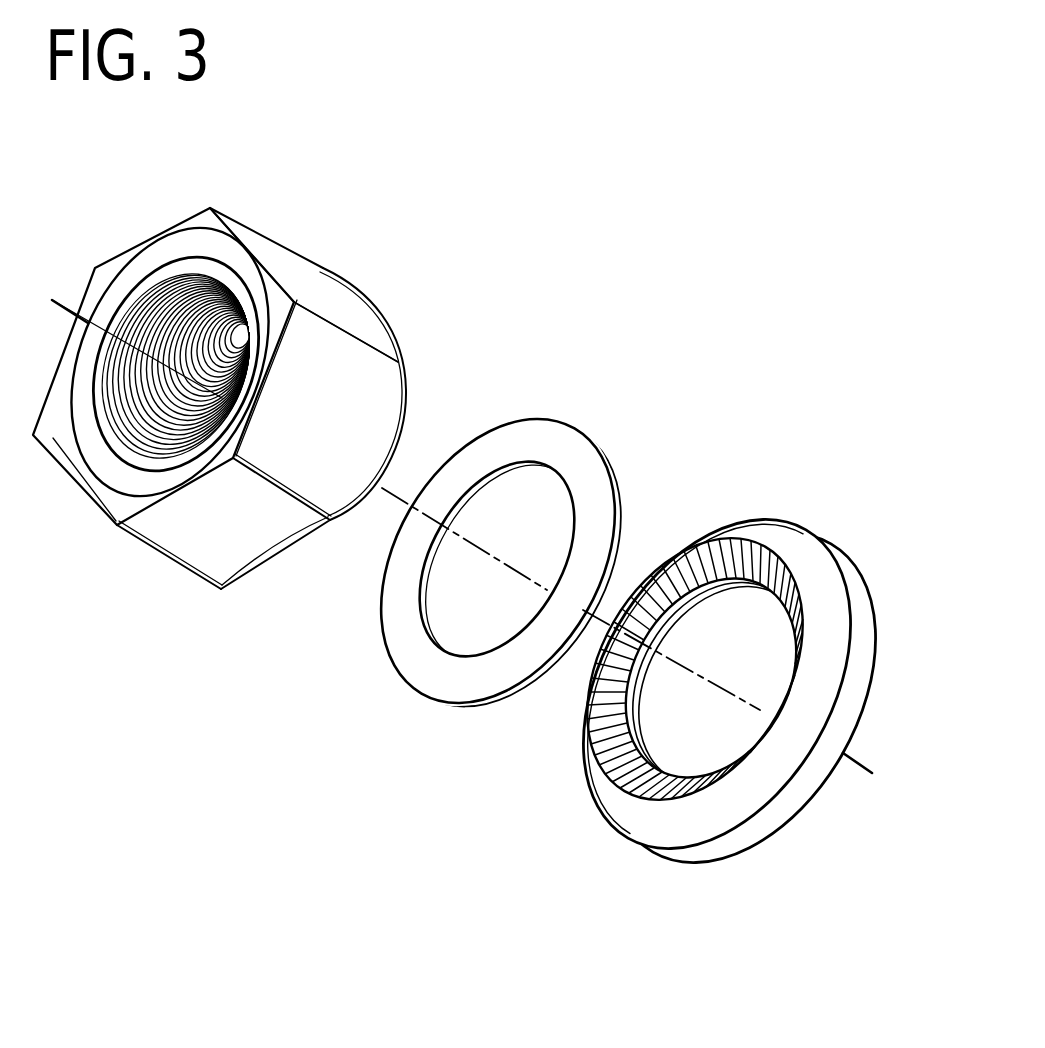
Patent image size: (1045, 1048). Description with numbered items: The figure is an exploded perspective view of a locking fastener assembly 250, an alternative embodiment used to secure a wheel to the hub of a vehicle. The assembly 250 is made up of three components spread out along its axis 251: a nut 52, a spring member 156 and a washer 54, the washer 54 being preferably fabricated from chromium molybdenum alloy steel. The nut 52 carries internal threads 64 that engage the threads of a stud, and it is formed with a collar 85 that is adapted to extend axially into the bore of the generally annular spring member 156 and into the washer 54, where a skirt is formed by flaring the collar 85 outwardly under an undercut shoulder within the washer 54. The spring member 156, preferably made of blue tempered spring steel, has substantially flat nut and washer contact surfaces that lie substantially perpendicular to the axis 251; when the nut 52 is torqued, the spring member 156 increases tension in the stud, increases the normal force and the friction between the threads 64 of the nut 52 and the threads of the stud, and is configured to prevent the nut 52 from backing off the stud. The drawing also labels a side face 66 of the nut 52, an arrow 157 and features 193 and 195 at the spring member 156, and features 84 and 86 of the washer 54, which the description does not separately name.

The locking fastener assembly 250 is at (612, 305).
The axis 251 is at (38, 428).
The nut 52 is at (360, 343).
The threads 64 is at (129, 430).
The side face of nut 66 is at (231, 505).
The collar 85 is at (354, 516).
The spring member 156 is at (573, 449).
The rotation direction 157 is at (506, 503).
The outer periphery of washer 193 is at (617, 527).
The washer face 195 is at (420, 653).
The washer 54 is at (838, 554).
The serrations 84 is at (628, 770).
The outer rim of lock ring 86 is at (797, 817).